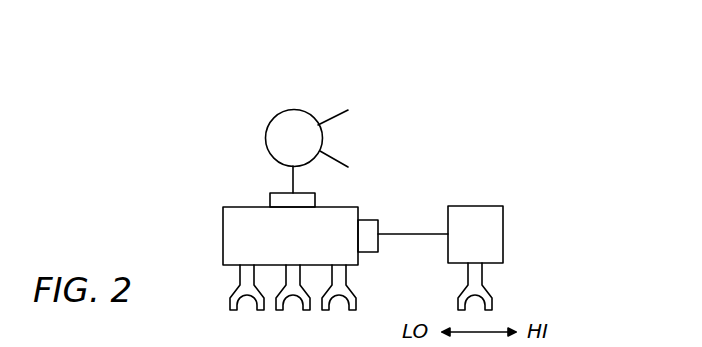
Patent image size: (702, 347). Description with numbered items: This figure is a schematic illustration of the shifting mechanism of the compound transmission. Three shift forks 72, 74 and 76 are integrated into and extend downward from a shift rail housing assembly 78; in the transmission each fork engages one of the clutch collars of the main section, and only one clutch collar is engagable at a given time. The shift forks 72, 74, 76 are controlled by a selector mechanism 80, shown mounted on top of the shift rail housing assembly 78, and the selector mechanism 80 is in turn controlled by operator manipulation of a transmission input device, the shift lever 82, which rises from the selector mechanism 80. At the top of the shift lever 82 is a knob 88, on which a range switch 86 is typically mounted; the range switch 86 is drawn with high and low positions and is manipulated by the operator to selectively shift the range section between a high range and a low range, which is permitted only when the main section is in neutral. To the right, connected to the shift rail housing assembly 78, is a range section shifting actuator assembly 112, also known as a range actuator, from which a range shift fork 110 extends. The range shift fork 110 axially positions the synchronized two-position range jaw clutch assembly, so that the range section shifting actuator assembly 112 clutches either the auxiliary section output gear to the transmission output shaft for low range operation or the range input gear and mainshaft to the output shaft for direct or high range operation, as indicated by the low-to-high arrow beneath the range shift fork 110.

The shift fork 72 is at (231, 298).
The shift fork 74 is at (302, 280).
The shift fork 76 is at (344, 278).
The shift rail housing assembly 78 is at (233, 238).
The selector mechanism 80 is at (269, 199).
The shift lever 82 is at (293, 178).
The range switch 86 is at (328, 120).
The knob 88 is at (267, 124).
The range shift fork 110 is at (482, 283).
The range section shifting actuator assembly 112 is at (503, 232).